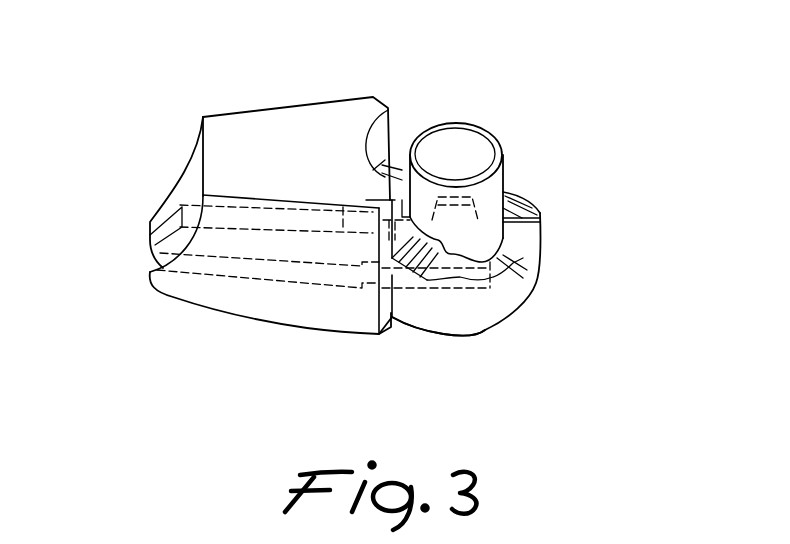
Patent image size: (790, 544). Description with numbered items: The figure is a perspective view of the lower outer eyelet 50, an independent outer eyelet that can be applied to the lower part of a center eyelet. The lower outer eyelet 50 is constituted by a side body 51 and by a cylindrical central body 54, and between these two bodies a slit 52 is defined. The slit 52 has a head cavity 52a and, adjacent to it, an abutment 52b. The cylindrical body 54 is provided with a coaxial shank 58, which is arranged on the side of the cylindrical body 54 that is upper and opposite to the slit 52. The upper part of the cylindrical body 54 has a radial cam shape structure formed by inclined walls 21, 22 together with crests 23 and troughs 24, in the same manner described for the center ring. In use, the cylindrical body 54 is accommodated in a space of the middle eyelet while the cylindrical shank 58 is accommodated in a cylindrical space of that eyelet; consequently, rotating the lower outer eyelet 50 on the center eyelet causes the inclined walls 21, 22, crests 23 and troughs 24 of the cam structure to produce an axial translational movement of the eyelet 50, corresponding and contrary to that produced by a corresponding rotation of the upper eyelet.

The lower outer eyelet 50 is at (168, 170).
The side body 51 is at (257, 140).
The slit 52 is at (155, 245).
The head cavity 52a is at (458, 233).
The abutment 52b is at (423, 213).
The coaxial shank 58 is at (448, 155).
The cylindrical central body 54 is at (463, 305).
The inclined wall 22 is at (522, 208).
The crest 23 is at (513, 245).
The inclined wall 21 is at (523, 257).
The trough 24 is at (503, 290).